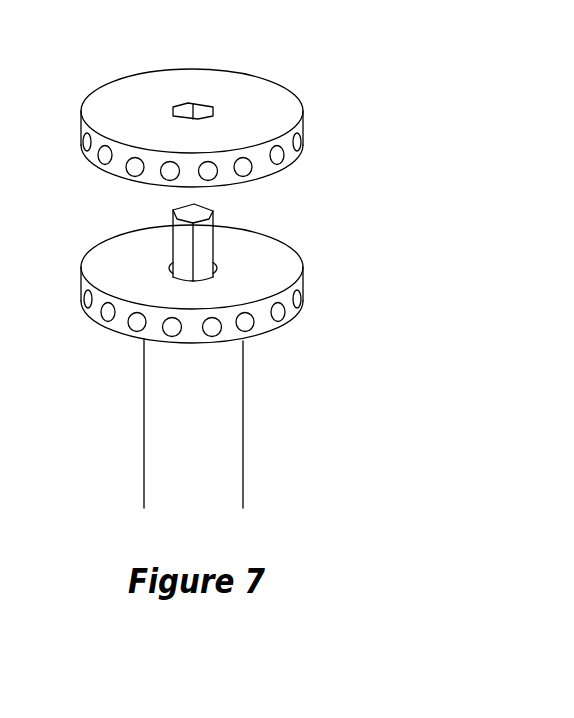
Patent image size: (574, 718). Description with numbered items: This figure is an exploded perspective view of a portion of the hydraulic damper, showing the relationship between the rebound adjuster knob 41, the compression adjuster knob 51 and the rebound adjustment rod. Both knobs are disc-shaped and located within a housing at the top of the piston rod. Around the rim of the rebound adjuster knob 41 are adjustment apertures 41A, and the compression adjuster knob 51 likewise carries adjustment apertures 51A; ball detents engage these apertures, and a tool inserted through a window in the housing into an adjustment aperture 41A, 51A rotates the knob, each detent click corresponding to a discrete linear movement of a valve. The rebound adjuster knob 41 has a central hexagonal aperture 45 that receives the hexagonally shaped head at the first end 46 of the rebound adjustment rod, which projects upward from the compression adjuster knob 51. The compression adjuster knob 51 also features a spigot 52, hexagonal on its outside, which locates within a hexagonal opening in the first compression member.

The rebound adjuster knob 41 is at (268, 105).
The adjustment apertures 41A is at (303, 147).
The hexagonal aperture 45 is at (202, 110).
The first end 46 is at (180, 242).
The compression adjuster knob 51 is at (268, 262).
The adjustment apertures 51A is at (305, 303).
The spigot 52 is at (220, 458).